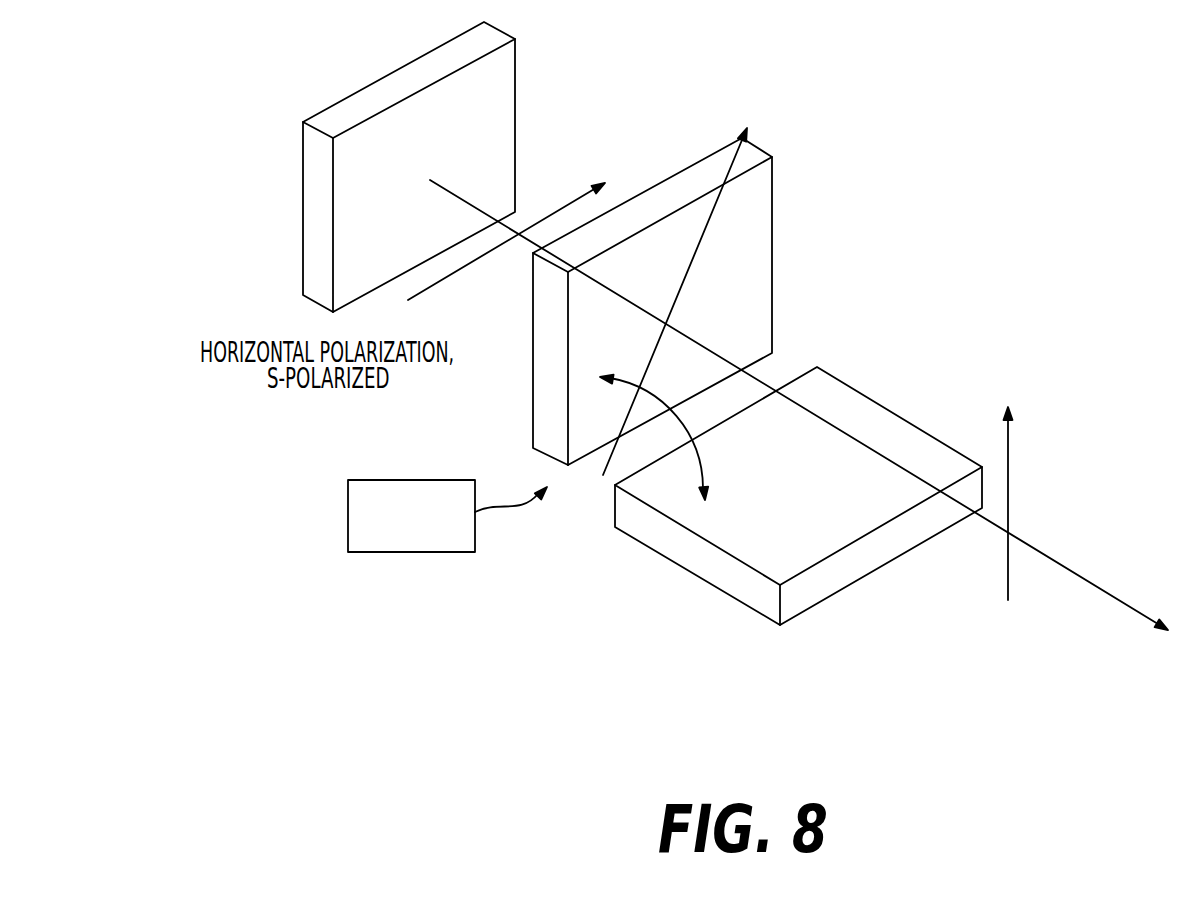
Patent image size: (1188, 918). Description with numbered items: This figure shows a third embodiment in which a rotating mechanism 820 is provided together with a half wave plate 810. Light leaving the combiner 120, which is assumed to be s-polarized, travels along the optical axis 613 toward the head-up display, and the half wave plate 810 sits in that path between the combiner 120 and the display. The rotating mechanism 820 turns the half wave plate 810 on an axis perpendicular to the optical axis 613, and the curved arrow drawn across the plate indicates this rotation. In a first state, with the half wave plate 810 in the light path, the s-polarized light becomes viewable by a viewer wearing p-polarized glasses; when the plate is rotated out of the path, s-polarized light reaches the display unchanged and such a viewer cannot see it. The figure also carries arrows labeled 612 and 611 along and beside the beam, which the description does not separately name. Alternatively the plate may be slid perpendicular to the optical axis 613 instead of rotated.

The combiner 120 is at (517, 68).
The incoming light beam direction 612 is at (578, 193).
The half wave plate 810 is at (758, 288).
The vertical (P-polarized) output component 611 is at (1010, 472).
The optical axis 613 is at (1095, 587).
The rotating mechanism 820 is at (348, 515).